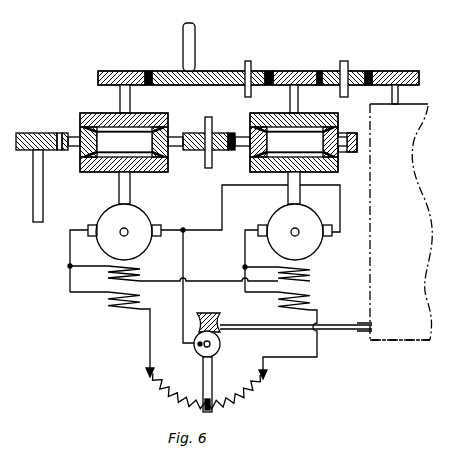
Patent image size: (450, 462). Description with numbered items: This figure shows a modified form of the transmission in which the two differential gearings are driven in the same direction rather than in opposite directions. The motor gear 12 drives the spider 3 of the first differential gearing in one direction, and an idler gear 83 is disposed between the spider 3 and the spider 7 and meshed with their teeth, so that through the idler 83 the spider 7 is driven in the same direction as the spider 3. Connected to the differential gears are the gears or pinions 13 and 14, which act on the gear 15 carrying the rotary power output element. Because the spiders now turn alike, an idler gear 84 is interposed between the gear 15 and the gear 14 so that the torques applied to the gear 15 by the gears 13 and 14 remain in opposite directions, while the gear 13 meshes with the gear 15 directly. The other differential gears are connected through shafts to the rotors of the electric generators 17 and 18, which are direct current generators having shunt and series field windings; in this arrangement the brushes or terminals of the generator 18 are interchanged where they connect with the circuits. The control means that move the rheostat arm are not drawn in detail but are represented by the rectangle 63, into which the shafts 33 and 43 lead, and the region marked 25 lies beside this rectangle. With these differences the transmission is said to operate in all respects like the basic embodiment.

The spider 3 is at (72, 133).
The spider 7 is at (340, 134).
The motor gear 12 is at (38, 133).
The gear or pinion 13 is at (107, 72).
The gear or pinion 14 is at (285, 74).
The gear 15 is at (197, 72).
The electric generator 17 is at (138, 218).
The electric generator 18 is at (282, 215).
The housing 25 is at (410, 222).
The shaft 33 is at (356, 327).
The shaft 43 is at (400, 97).
The rectangle 63 is at (382, 340).
The idler gear 83 is at (213, 135).
The idler gear 84 is at (252, 72).